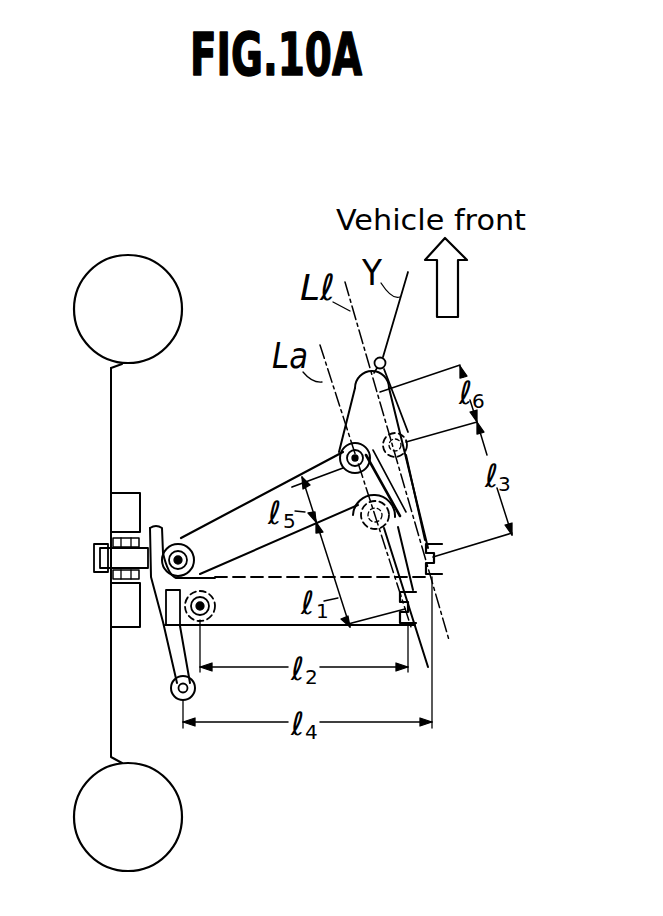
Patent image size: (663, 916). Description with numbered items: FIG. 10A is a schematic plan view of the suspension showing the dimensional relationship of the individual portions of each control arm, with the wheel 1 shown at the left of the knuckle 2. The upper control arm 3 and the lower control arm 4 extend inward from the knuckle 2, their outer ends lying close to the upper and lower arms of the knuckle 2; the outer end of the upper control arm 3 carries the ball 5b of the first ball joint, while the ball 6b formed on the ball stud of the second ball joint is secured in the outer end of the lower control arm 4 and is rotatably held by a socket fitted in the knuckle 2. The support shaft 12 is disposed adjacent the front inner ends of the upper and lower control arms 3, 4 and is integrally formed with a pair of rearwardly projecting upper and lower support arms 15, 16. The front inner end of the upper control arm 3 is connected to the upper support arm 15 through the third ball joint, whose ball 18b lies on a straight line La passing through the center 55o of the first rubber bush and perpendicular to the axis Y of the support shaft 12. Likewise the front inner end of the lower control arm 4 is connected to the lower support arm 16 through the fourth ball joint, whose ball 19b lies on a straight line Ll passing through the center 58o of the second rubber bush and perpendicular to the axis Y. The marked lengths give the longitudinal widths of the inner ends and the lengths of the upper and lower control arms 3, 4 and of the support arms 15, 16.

The wheel 1 is at (85, 300).
The knuckle 2 is at (153, 527).
The upper control arm 3 is at (253, 566).
The lower control arm 4 is at (248, 512).
The lower pivot 5b is at (216, 605).
The ball 6b is at (183, 545).
The support shaft 12 is at (360, 397).
The upper support arm 15 is at (398, 503).
The lower support arm 16 is at (403, 425).
The ball 18b is at (362, 533).
The ball 19b is at (406, 450).
The center of the second rubber bush 58o is at (441, 562).
The center of the first rubber bush 55o is at (417, 612).